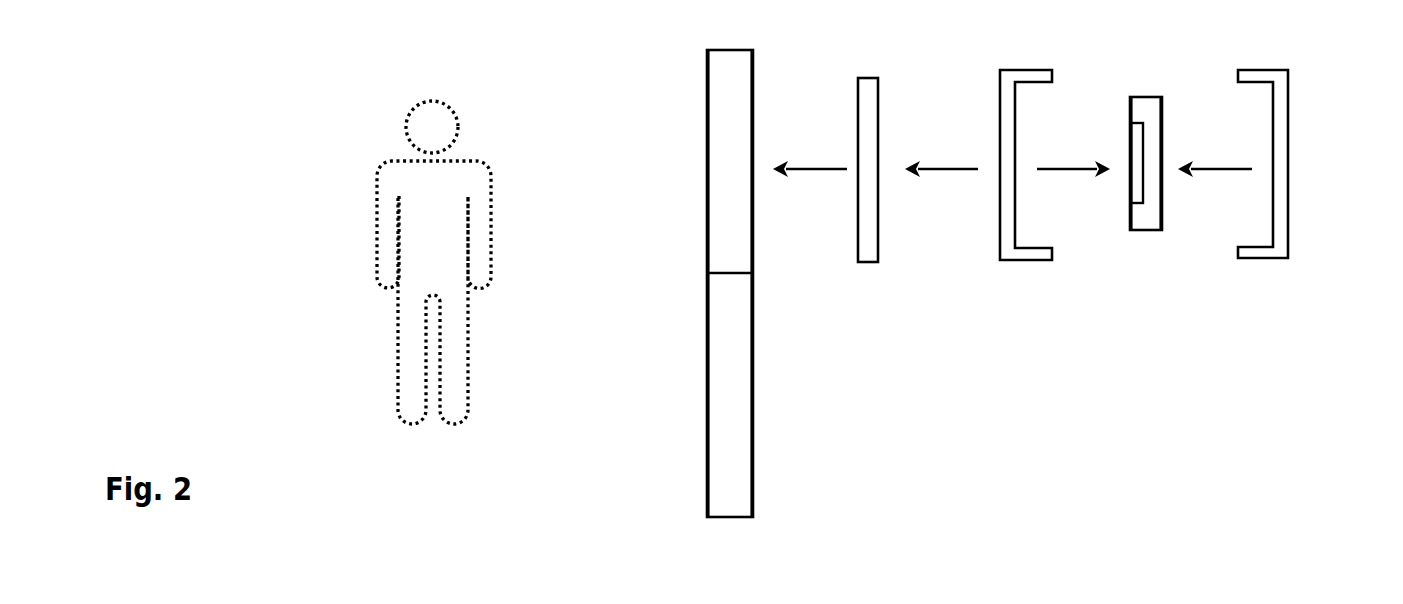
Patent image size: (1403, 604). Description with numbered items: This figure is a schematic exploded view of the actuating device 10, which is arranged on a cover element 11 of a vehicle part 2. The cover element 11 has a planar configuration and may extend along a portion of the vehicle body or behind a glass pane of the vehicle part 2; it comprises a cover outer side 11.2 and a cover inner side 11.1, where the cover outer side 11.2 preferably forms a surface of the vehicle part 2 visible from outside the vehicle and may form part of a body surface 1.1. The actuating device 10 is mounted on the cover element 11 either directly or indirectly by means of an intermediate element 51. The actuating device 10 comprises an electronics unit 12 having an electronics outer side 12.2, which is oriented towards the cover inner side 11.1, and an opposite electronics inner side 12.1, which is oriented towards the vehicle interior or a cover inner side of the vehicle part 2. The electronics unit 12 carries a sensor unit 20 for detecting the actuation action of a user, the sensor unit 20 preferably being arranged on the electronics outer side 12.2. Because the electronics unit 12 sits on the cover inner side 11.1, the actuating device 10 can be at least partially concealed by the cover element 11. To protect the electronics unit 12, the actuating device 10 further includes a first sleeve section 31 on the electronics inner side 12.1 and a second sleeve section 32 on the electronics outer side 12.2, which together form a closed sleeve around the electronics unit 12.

The actuating device 10 is at (1274, 297).
The cover element 11 is at (724, 218).
The cover inner side 11.1 is at (766, 108).
The cover outer side 11.2 is at (688, 108).
The body surface 1.1 is at (707, 347).
The vehicle part 2 is at (737, 385).
The intermediate element 51 is at (872, 250).
The second sleeve section 32 is at (1008, 192).
The first sleeve section 31 is at (1282, 192).
The electronics unit 12 is at (1149, 266).
The electronics inner side 12.1 is at (1184, 110).
The electronics outer side 12.2 is at (1116, 110).
The sensor unit 20 is at (1133, 190).